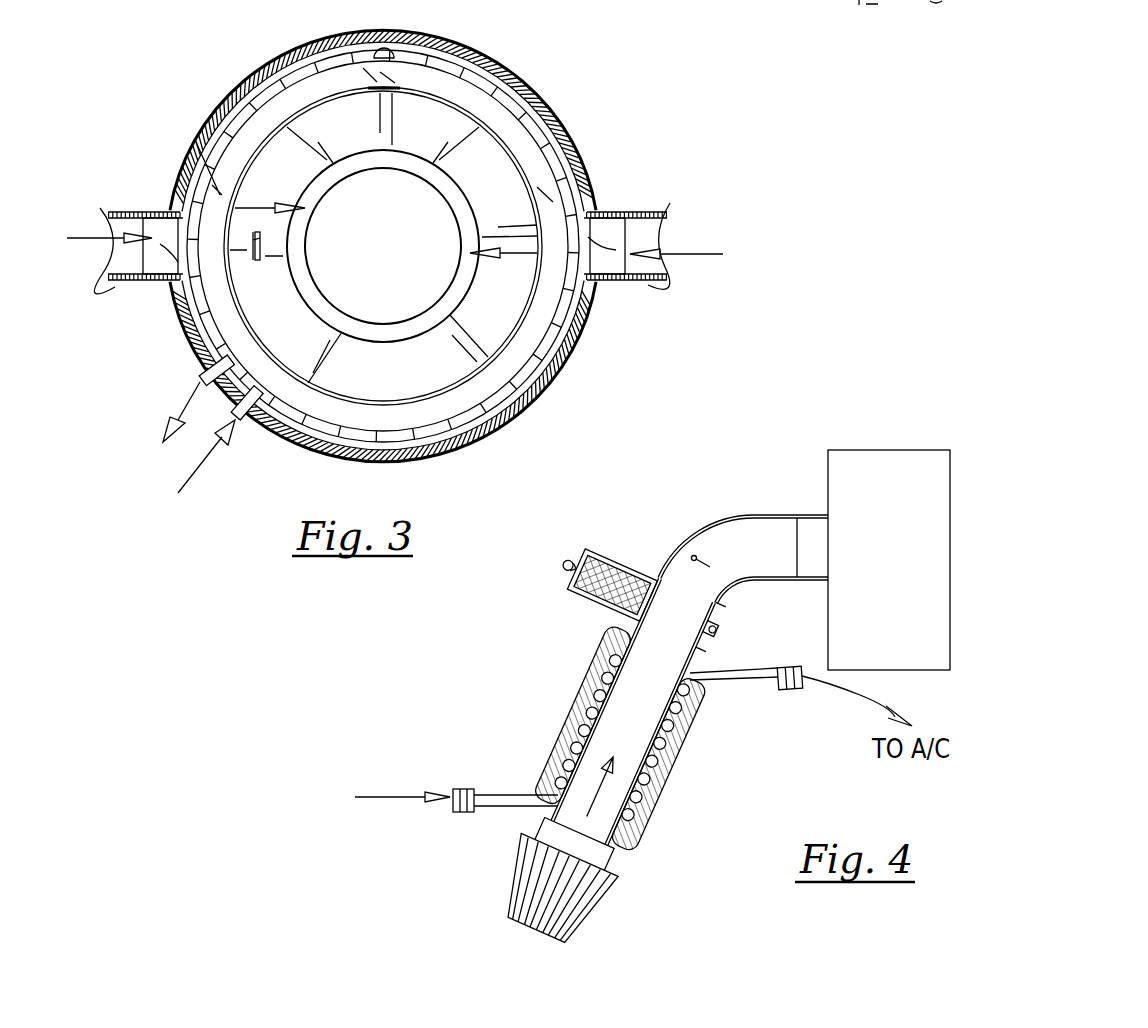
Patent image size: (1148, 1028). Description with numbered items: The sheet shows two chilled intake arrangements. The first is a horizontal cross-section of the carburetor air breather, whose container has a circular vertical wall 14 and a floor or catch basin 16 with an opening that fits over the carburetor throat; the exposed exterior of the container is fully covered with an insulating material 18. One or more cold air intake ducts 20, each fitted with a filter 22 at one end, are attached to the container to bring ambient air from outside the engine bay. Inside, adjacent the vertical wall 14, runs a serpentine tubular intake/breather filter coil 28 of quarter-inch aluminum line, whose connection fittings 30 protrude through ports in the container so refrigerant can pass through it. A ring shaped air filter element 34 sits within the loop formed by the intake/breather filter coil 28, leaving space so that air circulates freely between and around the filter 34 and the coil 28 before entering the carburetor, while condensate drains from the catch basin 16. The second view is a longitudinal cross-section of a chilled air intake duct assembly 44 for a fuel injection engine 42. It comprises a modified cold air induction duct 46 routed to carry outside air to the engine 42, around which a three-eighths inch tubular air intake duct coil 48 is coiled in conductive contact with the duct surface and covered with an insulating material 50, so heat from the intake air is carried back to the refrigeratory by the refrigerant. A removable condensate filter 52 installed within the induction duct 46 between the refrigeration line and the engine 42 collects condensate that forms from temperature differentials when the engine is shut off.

In FIG. 3, the circular vertical wall 14 is at (295, 62).
In FIG. 3, the floor or catch basin 16 is at (432, 373).
In FIG. 3, the insulating material 18 is at (562, 118).
In FIG. 3, the air intake duct 20 is at (126, 212).
In FIG. 4, the filter 22 is at (520, 897).
In FIG. 3, the tubular intake/breather filter coil 28 is at (507, 71).
In FIG. 3, the connection fittings 30 is at (200, 372).
In FIG. 3, the ring shaped air filter element 34 is at (556, 290).
In FIG. 4, the engine 42 is at (904, 509).
In FIG. 4, the chilled air intake duct assembly 44 is at (520, 676).
In FIG. 4, the cold air induction duct 46 is at (738, 517).
In FIG. 4, the tubular air intake duct coil 48 is at (500, 794).
In FIG. 4, the insulating material 50 is at (590, 685).
In FIG. 4, the removable condensate filter 52 is at (630, 562).